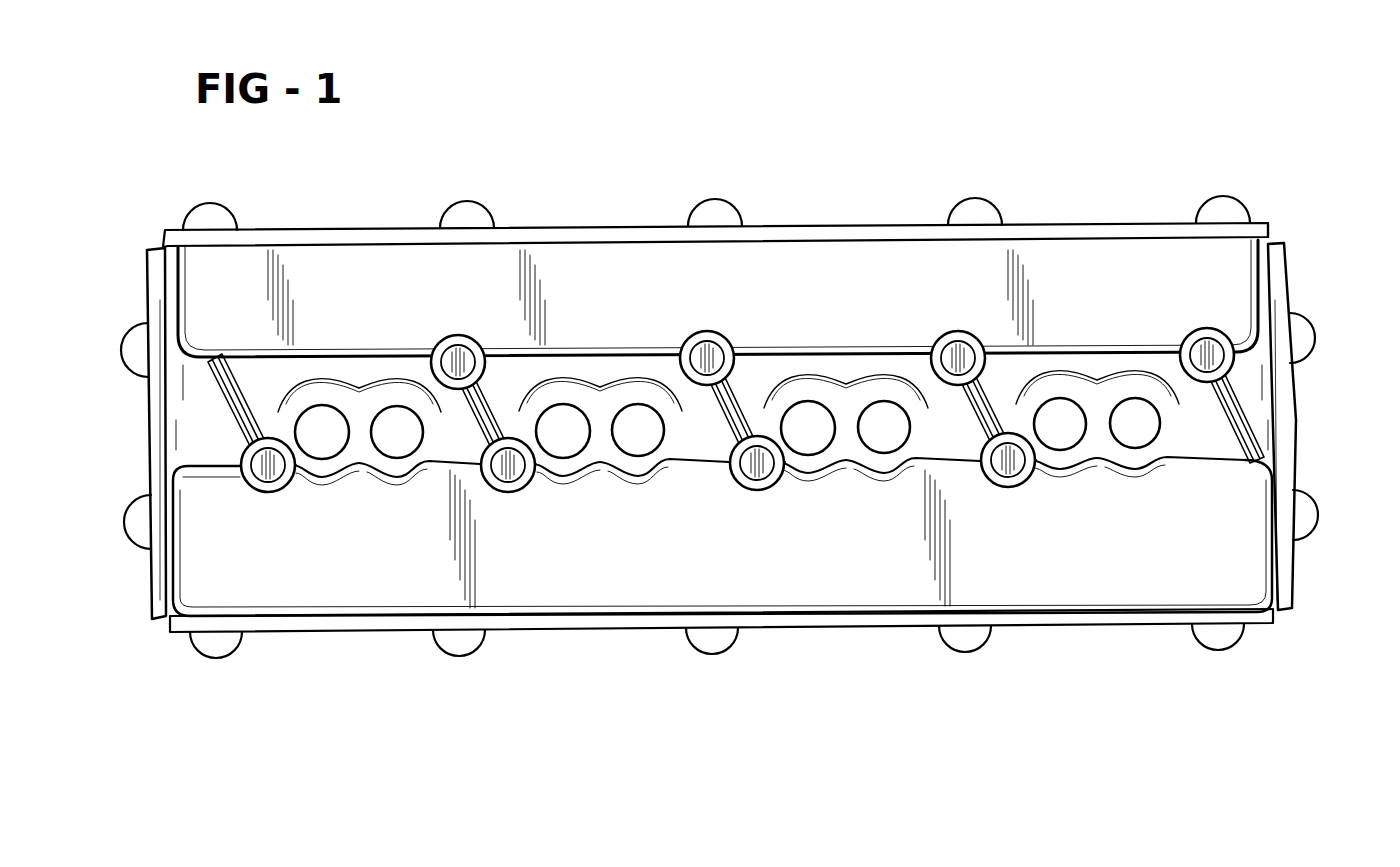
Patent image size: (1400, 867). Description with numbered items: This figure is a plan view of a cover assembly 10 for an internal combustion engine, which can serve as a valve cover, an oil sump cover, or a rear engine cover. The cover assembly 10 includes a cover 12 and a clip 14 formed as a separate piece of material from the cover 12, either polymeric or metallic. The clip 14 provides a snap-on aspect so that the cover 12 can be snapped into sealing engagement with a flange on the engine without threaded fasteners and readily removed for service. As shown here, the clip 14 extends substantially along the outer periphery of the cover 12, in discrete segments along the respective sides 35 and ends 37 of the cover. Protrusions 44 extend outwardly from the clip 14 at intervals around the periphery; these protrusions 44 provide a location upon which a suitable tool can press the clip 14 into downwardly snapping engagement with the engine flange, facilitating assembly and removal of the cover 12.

The cover assembly 10 is at (853, 101).
The cover 12 is at (1112, 242).
The clip 14 is at (1268, 232).
The sides 35 is at (843, 223).
The ends 37 is at (128, 410).
The protrusions 44 is at (230, 214).